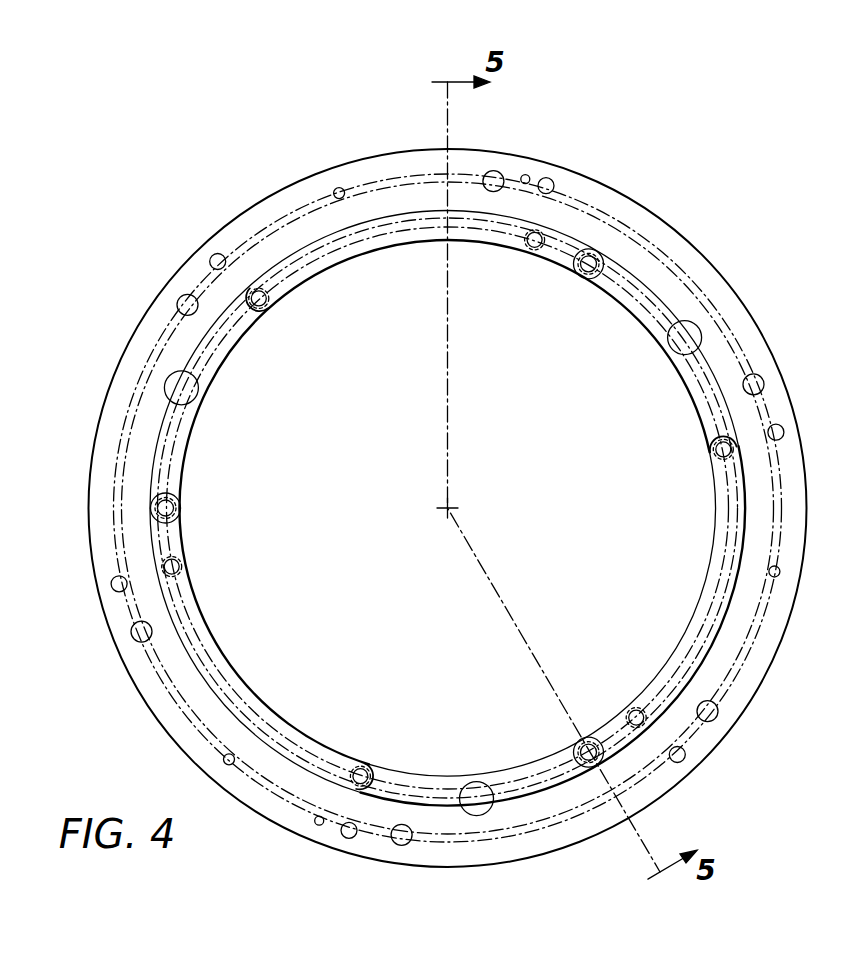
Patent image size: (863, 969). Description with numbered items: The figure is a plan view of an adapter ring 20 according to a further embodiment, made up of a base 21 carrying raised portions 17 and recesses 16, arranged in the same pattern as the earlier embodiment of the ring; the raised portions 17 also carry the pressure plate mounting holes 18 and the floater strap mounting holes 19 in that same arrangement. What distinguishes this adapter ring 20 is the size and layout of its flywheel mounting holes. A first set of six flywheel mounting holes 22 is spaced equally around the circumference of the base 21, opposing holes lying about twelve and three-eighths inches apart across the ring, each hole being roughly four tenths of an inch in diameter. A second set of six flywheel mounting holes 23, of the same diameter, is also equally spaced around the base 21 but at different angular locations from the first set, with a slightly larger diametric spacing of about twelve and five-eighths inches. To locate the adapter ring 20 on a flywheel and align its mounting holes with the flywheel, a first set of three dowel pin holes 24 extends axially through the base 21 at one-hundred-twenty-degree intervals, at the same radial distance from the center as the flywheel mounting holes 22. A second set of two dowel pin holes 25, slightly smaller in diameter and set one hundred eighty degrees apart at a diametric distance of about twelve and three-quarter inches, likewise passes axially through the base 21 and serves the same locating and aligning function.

The adapter ring 20 is at (476, 485).
The base 21 is at (640, 215).
The raised portions 17 is at (406, 235).
The recesses 16 is at (198, 390).
The pressure plate mounting holes 18 is at (533, 250).
The floater strap mounting holes 19 is at (586, 280).
The first set of flywheel mounting holes 22 is at (498, 172).
The second set of flywheel mounting holes 23 is at (553, 181).
The first set of dowel pin holes 24 is at (340, 188).
The second set of dowel pin holes 25 is at (527, 174).